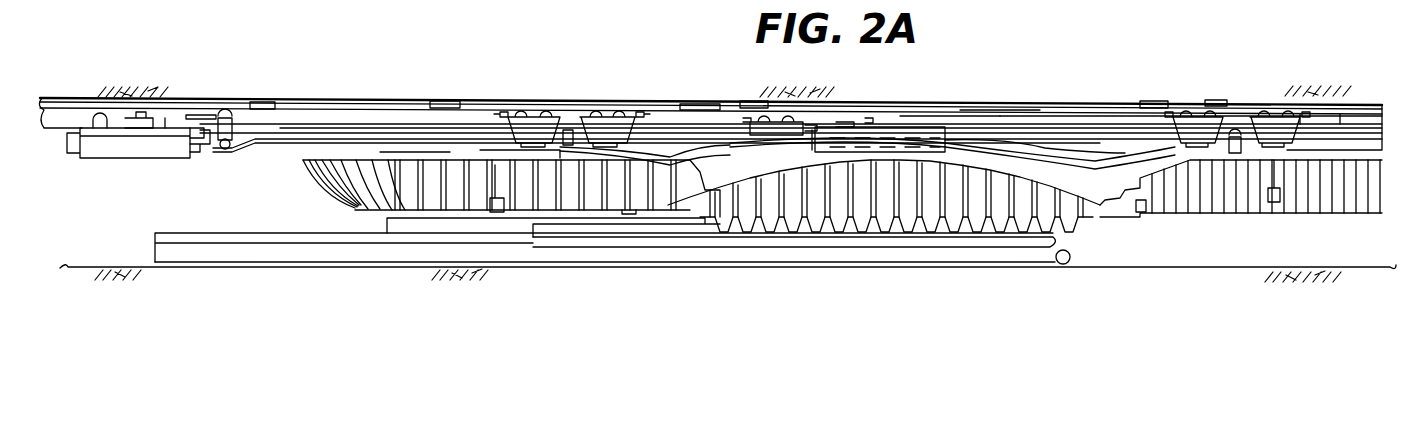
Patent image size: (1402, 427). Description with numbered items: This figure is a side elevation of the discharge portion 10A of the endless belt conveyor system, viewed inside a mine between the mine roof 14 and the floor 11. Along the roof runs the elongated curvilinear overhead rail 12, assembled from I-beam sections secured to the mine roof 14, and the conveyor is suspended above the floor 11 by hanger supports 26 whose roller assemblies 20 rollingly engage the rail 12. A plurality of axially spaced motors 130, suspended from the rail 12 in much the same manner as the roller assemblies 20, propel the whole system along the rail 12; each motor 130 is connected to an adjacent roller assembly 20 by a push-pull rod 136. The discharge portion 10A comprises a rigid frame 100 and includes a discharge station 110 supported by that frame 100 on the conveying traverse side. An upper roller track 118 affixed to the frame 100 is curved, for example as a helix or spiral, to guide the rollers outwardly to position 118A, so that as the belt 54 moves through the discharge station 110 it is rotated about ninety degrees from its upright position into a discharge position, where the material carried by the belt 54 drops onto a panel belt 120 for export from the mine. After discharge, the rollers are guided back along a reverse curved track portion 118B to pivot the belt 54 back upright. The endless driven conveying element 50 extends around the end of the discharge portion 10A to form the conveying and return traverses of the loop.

The floor 11 is at (860, 303).
The overhead rail 12 is at (61, 112).
The mine roof 14 is at (967, 91).
The discharge portion 10A is at (1030, 108).
The discharge station 110 is at (997, 97).
The motors 130 is at (163, 140).
The push-pull rod 136 is at (268, 138).
The roller assemblies 20 is at (531, 128).
The hanger supports 26 is at (568, 145).
The upper roller track 118 is at (1105, 150).
The outward position along track 118A is at (849, 135).
The reverse curved track portion 118B is at (650, 150).
The conveying element 50 is at (348, 182).
The belt 54 is at (1197, 187).
The rigid frame 100 is at (593, 224).
The panel belt 120 is at (682, 250).